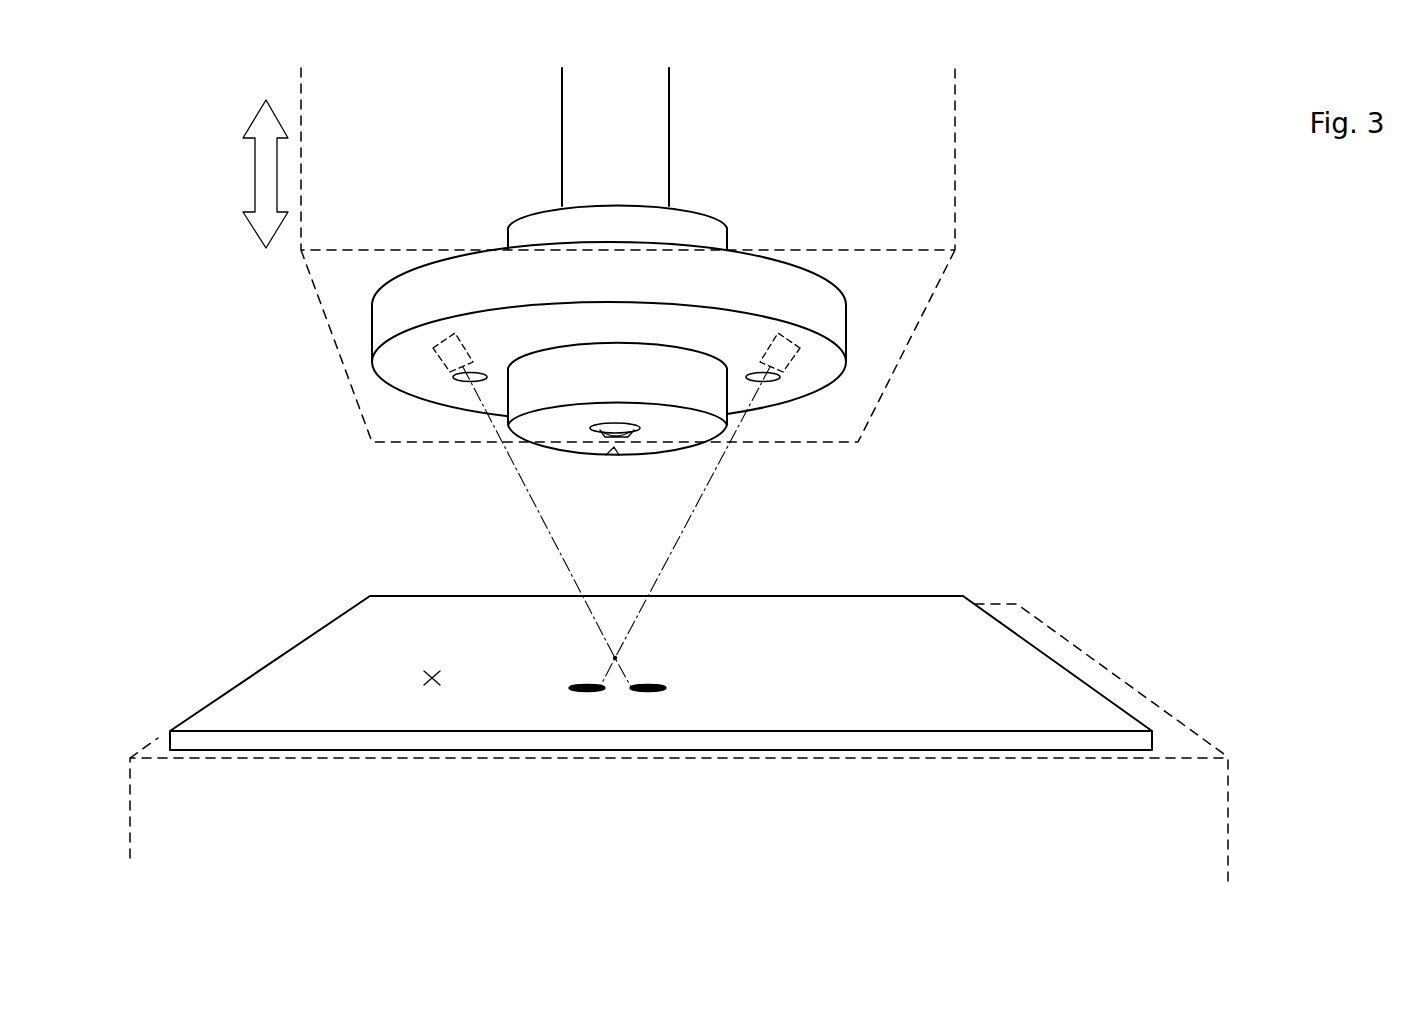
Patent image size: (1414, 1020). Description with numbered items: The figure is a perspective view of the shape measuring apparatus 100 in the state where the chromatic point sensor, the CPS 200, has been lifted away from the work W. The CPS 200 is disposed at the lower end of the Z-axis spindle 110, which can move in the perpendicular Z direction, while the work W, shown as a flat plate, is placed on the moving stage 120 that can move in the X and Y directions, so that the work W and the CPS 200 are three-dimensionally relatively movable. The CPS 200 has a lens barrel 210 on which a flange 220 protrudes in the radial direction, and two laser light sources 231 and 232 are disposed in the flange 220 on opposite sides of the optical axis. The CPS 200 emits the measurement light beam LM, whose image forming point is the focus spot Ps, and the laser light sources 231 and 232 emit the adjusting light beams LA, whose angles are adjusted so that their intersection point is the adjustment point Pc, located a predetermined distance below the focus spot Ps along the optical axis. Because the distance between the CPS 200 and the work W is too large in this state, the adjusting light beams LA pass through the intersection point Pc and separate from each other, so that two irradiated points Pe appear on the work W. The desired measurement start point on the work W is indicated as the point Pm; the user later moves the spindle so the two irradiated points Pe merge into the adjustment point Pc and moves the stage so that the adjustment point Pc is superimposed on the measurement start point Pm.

The shape measuring apparatus 100 is at (1152, 202).
The Z-axis spindle 110 is at (938, 175).
The moving stage 120 is at (1120, 692).
The chromatic point sensor (CPS) 200 is at (652, 150).
The lens barrel 210 is at (532, 232).
The flange 220 is at (832, 320).
The laser light source 231 is at (447, 340).
The laser light source 232 is at (785, 340).
The measurement light beam LM is at (624, 444).
The adjusting light beam LA is at (647, 587).
The focus spot Ps is at (614, 447).
The adjustment point Pc is at (615, 660).
The irradiated point Pe is at (667, 683).
The measurement start point Pm is at (432, 678).
The work W is at (293, 665).